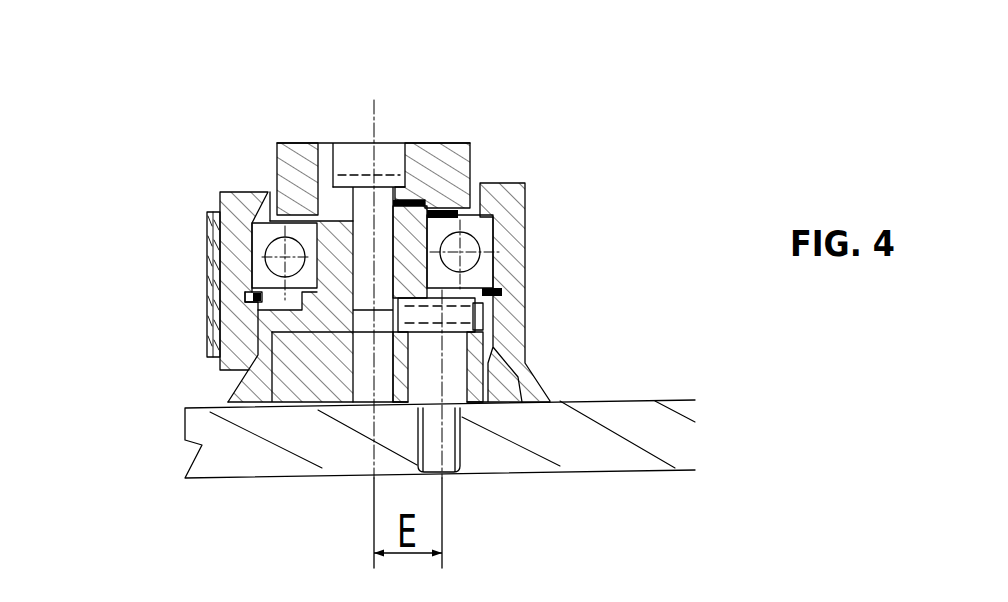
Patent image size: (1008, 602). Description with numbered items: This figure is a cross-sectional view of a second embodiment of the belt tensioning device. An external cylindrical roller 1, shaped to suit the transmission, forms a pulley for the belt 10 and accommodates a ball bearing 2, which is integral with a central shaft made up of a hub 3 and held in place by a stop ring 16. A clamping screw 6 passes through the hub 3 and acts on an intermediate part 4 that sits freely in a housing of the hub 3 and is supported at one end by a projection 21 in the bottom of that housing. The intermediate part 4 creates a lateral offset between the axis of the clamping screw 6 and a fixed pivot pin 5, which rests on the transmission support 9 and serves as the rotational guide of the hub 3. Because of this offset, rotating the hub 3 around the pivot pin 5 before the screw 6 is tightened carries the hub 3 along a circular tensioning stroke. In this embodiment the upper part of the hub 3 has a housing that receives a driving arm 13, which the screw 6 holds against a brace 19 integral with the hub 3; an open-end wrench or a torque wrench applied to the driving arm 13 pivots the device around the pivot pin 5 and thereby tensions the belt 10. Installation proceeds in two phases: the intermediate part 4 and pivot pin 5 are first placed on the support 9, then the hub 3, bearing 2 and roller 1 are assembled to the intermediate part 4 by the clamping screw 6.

The external cylindrical roller 1 is at (237, 217).
The ball bearing 2 is at (285, 255).
The hub 3 is at (338, 245).
The intermediate part 4 is at (298, 357).
The fixed pivot pin 5 is at (442, 365).
The clamping screw 6 is at (370, 358).
The transmission support 9 is at (215, 449).
The belt 10 is at (212, 260).
The driving arm 13 is at (457, 175).
The stop ring 16 is at (250, 297).
The brace 19 is at (495, 293).
The projection 21 is at (287, 330).